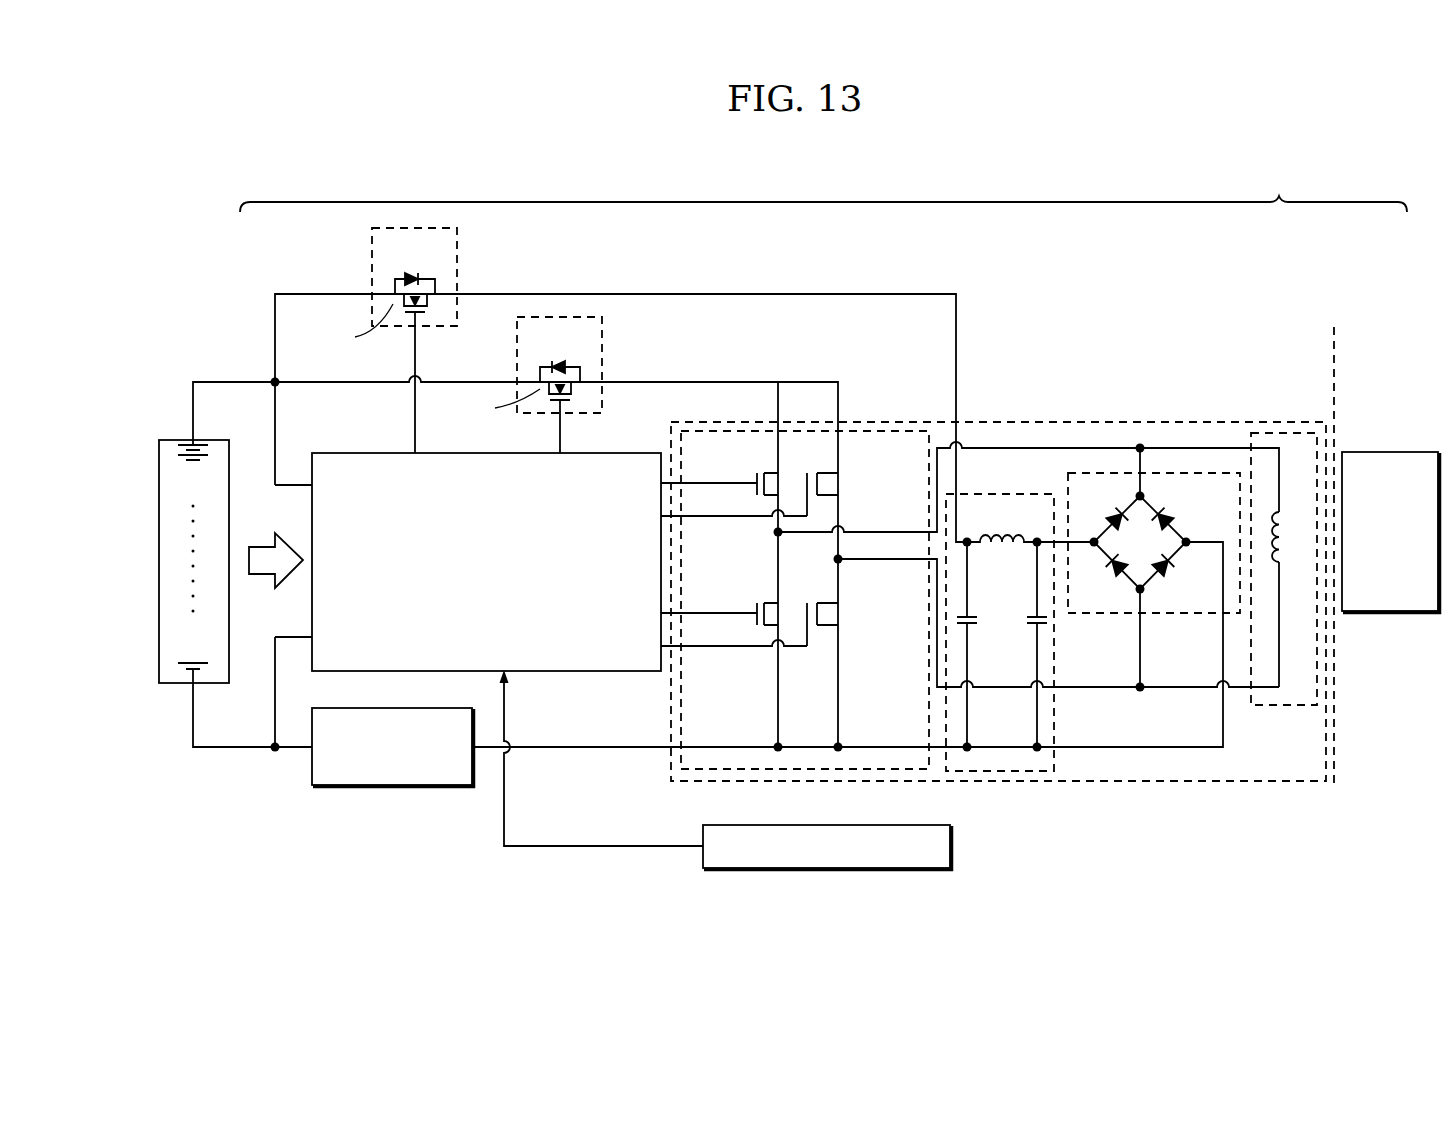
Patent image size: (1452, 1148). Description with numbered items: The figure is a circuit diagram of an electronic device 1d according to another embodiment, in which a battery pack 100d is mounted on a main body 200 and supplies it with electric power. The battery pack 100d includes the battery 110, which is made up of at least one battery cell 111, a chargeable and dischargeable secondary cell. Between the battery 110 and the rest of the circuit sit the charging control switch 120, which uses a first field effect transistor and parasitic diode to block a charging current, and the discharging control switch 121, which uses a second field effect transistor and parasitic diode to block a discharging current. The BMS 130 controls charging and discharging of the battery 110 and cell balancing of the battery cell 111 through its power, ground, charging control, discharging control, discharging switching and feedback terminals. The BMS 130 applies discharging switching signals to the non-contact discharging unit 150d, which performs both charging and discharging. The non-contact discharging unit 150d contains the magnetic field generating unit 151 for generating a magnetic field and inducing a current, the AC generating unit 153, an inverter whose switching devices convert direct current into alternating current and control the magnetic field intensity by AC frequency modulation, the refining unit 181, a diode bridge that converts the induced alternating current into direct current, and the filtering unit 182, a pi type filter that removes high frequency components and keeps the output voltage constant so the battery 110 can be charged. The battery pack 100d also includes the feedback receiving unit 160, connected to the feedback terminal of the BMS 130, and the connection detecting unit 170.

The electronic device 1d is at (823, 193).
The battery pack 100d is at (263, 236).
The battery 110 is at (181, 440).
The battery cell 111 is at (203, 448).
The charging control switch 120 is at (372, 262).
The discharging control switch 121 is at (602, 349).
The BMS 130 is at (575, 673).
The non-contact discharging unit 150d is at (1297, 423).
The magnetic field generating unit 151 is at (1260, 433).
The AC generating unit 153 is at (886, 431).
The feedback receiving unit 160 is at (815, 870).
The connection detecting unit 170 is at (380, 786).
The refining unit 181 is at (1112, 473).
The filtering unit 182 is at (1010, 494).
The main body 200 is at (1392, 452).